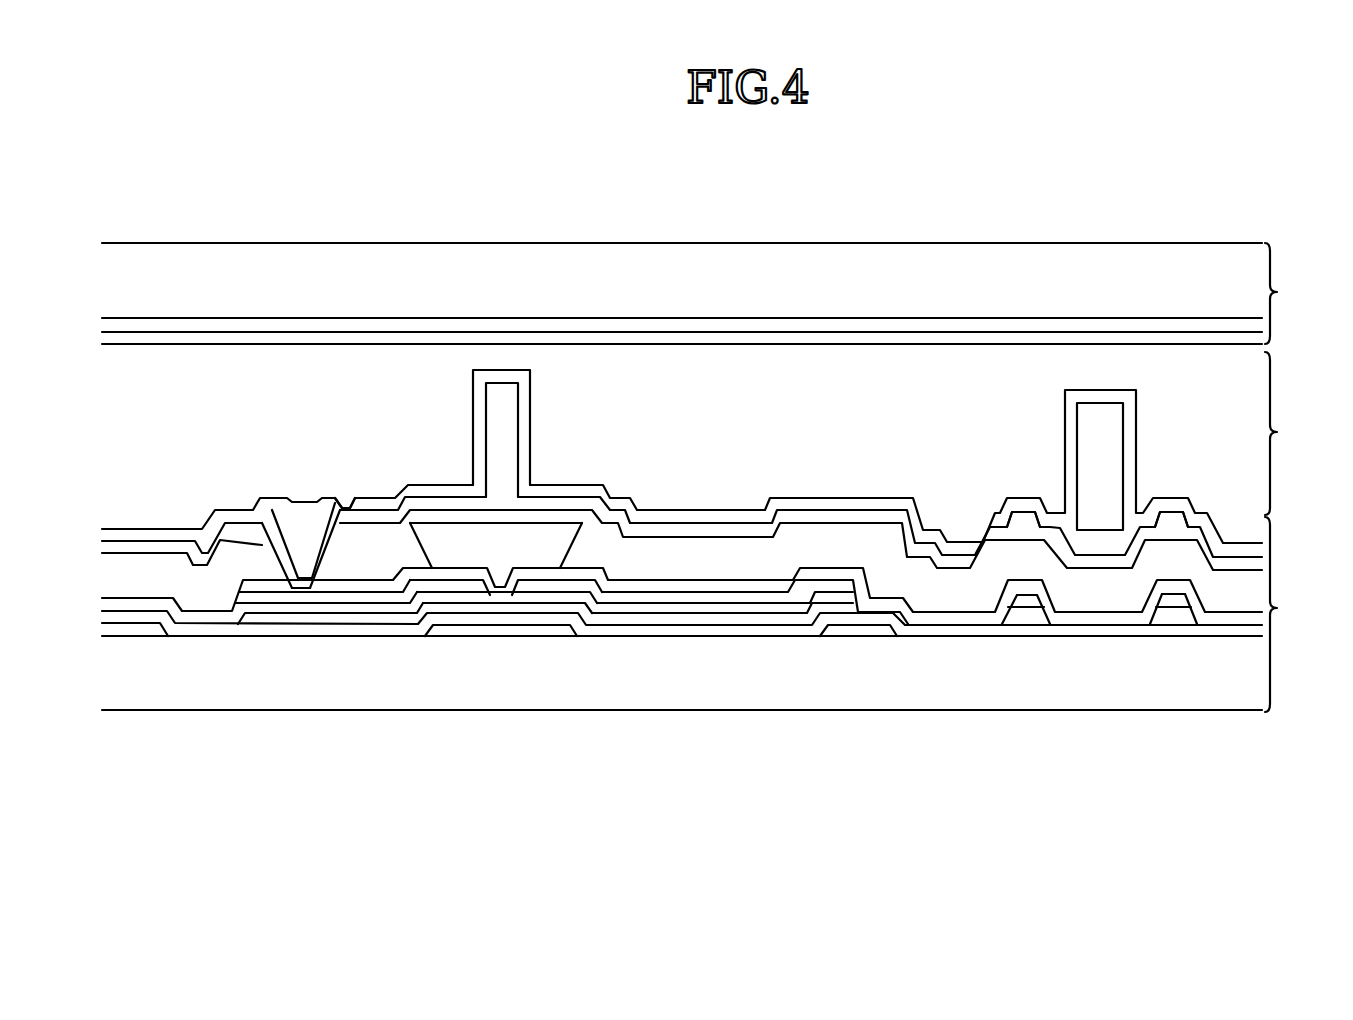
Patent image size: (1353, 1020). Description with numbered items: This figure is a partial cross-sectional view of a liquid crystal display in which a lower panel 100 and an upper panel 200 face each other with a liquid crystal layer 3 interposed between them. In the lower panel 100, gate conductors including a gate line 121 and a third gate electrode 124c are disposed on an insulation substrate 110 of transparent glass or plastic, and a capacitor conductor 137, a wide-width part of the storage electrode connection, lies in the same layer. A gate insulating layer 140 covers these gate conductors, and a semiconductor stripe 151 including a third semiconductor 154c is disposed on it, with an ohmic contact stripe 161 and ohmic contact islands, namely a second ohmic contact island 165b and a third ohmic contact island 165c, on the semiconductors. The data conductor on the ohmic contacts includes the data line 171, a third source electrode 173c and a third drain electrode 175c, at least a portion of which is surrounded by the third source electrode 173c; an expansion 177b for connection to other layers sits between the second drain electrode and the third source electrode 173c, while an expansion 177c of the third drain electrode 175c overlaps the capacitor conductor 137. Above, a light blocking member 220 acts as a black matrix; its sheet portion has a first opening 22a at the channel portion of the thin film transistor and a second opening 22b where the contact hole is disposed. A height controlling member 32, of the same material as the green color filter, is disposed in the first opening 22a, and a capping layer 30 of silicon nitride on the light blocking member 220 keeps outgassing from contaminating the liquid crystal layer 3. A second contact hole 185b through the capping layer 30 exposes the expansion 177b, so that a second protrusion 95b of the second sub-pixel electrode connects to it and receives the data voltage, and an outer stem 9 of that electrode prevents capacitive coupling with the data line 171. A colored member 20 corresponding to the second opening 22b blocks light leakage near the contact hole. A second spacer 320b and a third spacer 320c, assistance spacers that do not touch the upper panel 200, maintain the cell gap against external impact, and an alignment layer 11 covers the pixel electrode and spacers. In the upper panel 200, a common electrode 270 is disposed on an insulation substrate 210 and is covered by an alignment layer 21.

The liquid crystal layer 3 is at (1285, 433).
The outer stem 9 is at (1022, 520).
The alignment layer 11 is at (531, 391).
The colored member 20 is at (305, 530).
The alignment layer 21 is at (944, 346).
The first opening 22a is at (430, 540).
The second opening 22b is at (333, 560).
The capping layer 30 is at (695, 516).
The height controlling member 32 is at (556, 521).
The second protrusion 95b is at (265, 522).
The lower panel 100 is at (1296, 614).
The insulation substrate 110 is at (172, 690).
The gate line 121 is at (118, 630).
The third gate electrode 124c is at (515, 628).
The capacitor conductor 137 is at (872, 630).
The gate insulating layer 140 is at (215, 627).
The semiconductor stripe 151 is at (1013, 618).
The third semiconductor 154c is at (485, 601).
The ohmic contact stripe 161 is at (1025, 606).
The second ohmic contact island 165b is at (290, 606).
The third ohmic contact island 165c is at (558, 598).
The data line 171 is at (1035, 596).
The third source electrode 173c is at (455, 592).
The third drain electrode 175c is at (537, 585).
The expansion 177b is at (265, 600).
The expansion 177c is at (830, 585).
The second contact hole 185b is at (322, 545).
The upper panel 200 is at (1296, 293).
The insulation substrate 210 is at (727, 270).
The light blocking member 220 is at (710, 562).
The common electrode 270 is at (828, 330).
The second spacer 320b is at (503, 417).
The third spacer 320c is at (1108, 428).